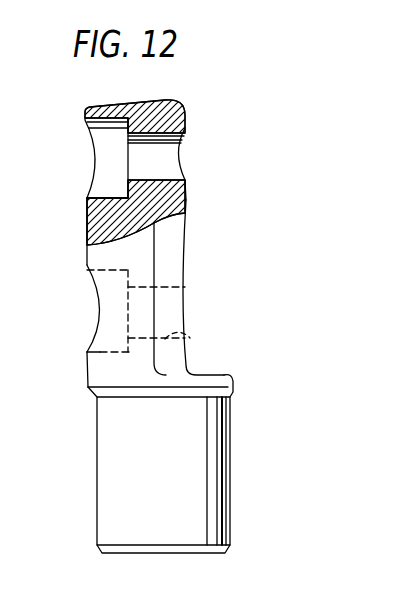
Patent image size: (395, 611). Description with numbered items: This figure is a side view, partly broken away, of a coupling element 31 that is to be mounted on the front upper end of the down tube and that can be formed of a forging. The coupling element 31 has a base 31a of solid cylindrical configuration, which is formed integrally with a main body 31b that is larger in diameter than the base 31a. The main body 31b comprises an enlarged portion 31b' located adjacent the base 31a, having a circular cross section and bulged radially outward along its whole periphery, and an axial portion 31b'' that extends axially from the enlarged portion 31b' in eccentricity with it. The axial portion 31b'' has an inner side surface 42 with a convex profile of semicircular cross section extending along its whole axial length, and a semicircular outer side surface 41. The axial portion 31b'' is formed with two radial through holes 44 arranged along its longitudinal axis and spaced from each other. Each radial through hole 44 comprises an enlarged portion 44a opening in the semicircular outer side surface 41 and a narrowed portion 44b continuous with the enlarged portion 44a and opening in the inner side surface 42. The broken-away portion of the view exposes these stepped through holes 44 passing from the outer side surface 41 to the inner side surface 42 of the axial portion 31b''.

The coupling element 31 is at (200, 293).
The base 31a is at (117, 482).
The main body 31b is at (58, 308).
The enlarged portion 31b' is at (264, 383).
The axial portion 31b'' is at (54, 231).
The semicircular outer side surface 41 is at (92, 227).
The inner side surface 42 is at (176, 253).
The radial through hole 44 is at (165, 162).
The enlarged portion 44a is at (102, 125).
The narrowed portion 44b is at (170, 151).